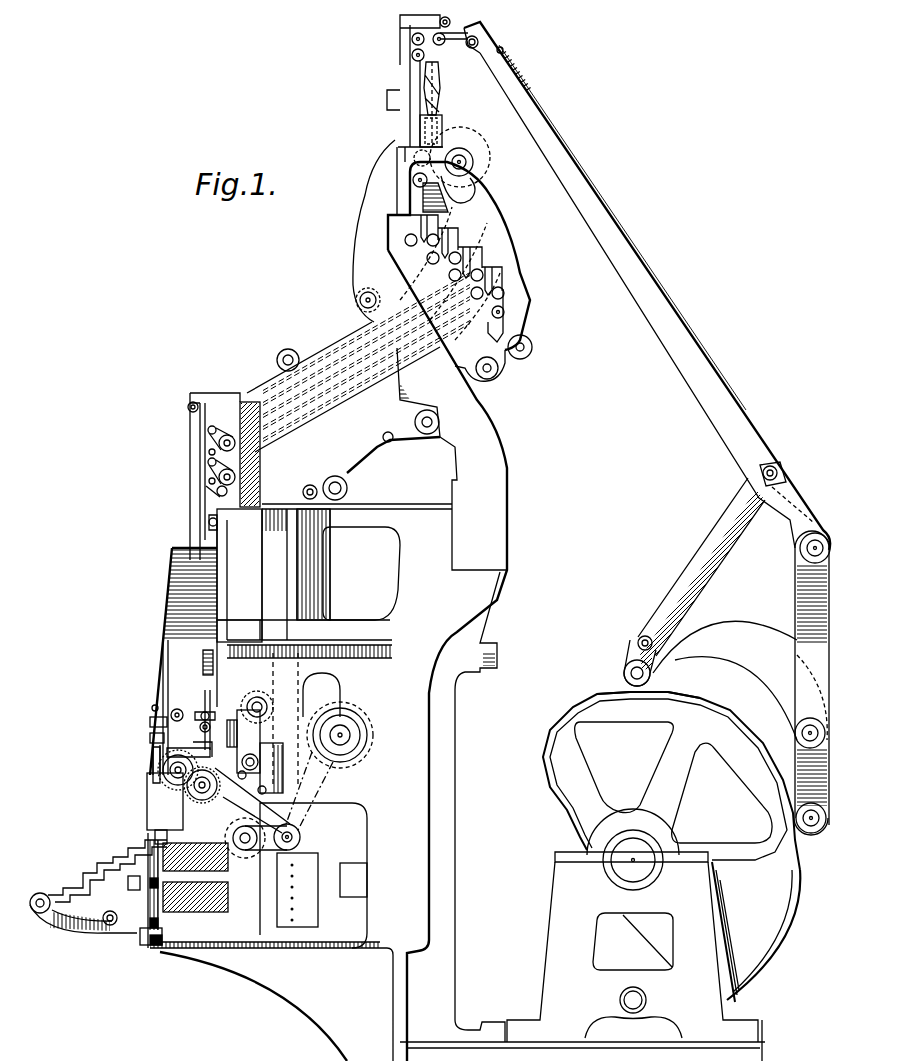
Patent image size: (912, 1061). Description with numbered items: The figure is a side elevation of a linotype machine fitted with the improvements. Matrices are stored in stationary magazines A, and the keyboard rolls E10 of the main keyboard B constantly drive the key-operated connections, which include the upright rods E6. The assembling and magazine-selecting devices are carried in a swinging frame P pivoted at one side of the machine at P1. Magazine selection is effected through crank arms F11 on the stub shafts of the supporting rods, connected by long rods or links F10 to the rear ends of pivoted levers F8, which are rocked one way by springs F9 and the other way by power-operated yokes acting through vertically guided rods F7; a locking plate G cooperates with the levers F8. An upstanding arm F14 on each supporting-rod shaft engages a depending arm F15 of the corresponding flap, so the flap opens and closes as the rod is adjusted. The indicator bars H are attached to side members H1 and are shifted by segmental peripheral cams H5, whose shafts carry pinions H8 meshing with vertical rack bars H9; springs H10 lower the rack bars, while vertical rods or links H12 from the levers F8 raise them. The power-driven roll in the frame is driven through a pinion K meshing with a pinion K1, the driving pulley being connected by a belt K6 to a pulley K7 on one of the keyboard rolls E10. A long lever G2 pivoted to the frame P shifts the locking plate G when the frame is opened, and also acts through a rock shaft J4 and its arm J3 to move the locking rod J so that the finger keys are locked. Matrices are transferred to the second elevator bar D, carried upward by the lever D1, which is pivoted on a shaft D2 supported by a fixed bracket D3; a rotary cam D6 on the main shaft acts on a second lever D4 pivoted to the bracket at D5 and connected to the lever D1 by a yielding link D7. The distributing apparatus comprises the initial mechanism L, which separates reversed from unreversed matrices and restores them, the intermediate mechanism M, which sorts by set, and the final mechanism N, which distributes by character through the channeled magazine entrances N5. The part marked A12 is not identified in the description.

The initial mechanism L is at (417, 46).
The second elevator bar D is at (471, 49).
The intermediate mechanism M is at (437, 160).
The final mechanism N is at (478, 270).
The channeled magazine entrances N5 is at (400, 293).
The lever D1 is at (632, 263).
The stationary magazines A is at (243, 400).
The swinging frame P is at (190, 437).
The upstanding arm F14 is at (222, 436).
The depending arm F15 is at (212, 466).
The crank arms F11 is at (219, 494).
The long rods or links F10 is at (211, 526).
The upright rods E6 is at (268, 575).
The pivot of swinging frame P1 is at (239, 564).
The springs F9 is at (178, 684).
The long lever G2 is at (208, 716).
The locking plate G is at (210, 725).
The pin A12 is at (153, 706).
The pivoted levers F8 is at (150, 720).
The vertically guided rods F7 is at (150, 740).
The rock shaft J4 is at (181, 750).
The arm J3 is at (153, 773).
The locking rod J is at (167, 785).
The driven pinion K is at (190, 795).
The pinion K1 is at (188, 803).
The vertical rods or links H12 is at (155, 837).
The indicator bars H is at (112, 872).
The vertical rack bars H9 is at (175, 856).
The main keyboard B is at (51, 893).
The side members H1 is at (130, 882).
The segmental peripheral cams H5 is at (108, 921).
The pinions H8 is at (146, 935).
The belt K6 is at (230, 846).
The springs H10 is at (172, 906).
The power-driven rolls E10 is at (303, 824).
The pulley K7 is at (301, 840).
The link D7 is at (690, 575).
The shaft D2 is at (812, 549).
The fixed bracket D3 is at (795, 630).
The second lever D4 is at (760, 673).
The pivot D5 is at (808, 733).
The rotary cam D6 is at (622, 710).